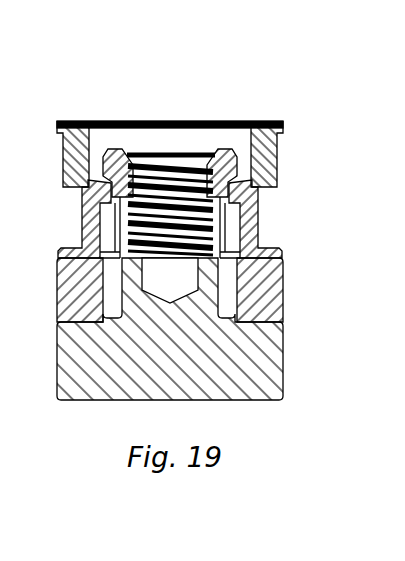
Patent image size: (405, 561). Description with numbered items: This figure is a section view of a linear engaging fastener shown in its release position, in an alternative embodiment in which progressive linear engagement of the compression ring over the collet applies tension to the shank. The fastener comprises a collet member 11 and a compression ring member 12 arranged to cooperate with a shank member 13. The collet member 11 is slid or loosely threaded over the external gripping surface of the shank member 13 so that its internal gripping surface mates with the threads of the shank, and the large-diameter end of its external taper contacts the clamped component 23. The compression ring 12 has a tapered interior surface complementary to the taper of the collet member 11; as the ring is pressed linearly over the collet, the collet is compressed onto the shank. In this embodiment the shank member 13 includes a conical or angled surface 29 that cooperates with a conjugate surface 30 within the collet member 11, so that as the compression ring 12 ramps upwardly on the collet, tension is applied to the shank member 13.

The collet member 11 is at (258, 228).
The compression ring member 12 is at (275, 152).
The shank member 13 is at (283, 355).
The component 23 is at (283, 290).
The conical or angled surface 29 is at (112, 185).
The conjugate surface 30 is at (258, 207).